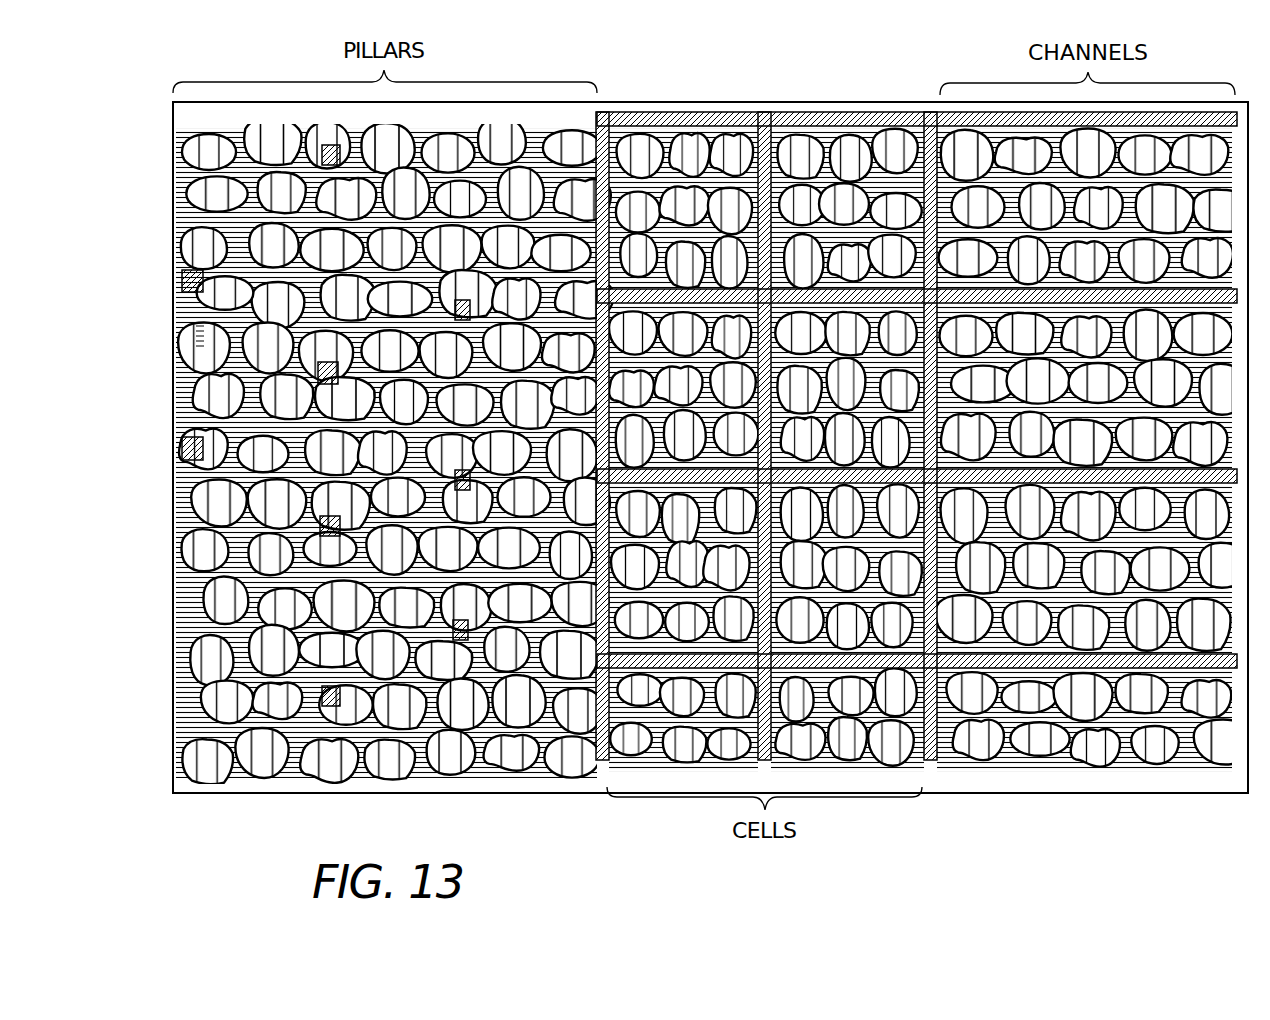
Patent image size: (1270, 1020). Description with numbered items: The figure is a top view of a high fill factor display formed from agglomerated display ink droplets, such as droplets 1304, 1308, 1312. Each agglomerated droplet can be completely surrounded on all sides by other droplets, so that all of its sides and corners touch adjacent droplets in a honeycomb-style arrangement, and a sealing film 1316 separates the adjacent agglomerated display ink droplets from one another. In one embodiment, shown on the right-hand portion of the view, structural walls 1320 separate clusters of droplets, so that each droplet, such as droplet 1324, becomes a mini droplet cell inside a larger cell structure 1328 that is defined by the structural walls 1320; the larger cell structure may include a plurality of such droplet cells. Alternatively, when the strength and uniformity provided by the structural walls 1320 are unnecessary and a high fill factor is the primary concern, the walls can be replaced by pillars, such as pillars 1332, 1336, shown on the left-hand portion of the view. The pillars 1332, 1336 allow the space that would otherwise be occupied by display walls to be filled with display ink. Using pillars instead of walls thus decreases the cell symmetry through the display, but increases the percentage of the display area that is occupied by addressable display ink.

The droplet 1304 is at (207, 315).
The droplet 1308 is at (197, 363).
The droplet 1312 is at (215, 407).
The sealing film 1316 is at (200, 335).
The structural walls 1320 is at (787, 410).
The droplet 1324 is at (655, 132).
The cell structure 1328 is at (916, 388).
The pillar 1332 is at (182, 274).
The pillar 1336 is at (193, 450).